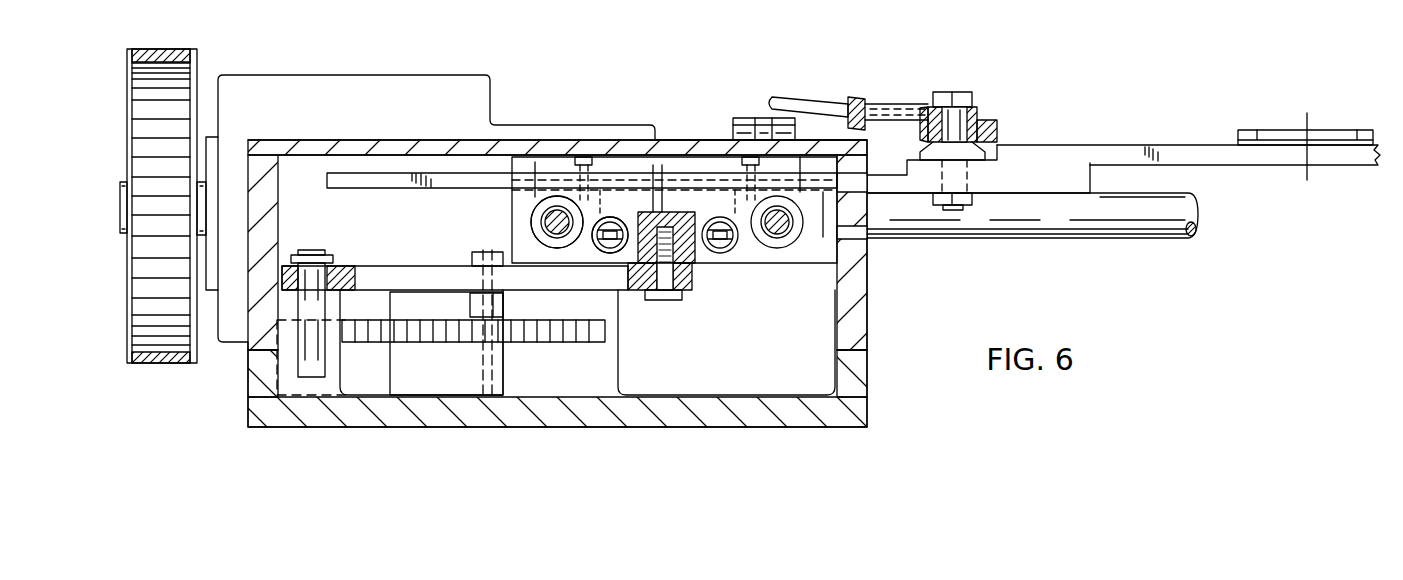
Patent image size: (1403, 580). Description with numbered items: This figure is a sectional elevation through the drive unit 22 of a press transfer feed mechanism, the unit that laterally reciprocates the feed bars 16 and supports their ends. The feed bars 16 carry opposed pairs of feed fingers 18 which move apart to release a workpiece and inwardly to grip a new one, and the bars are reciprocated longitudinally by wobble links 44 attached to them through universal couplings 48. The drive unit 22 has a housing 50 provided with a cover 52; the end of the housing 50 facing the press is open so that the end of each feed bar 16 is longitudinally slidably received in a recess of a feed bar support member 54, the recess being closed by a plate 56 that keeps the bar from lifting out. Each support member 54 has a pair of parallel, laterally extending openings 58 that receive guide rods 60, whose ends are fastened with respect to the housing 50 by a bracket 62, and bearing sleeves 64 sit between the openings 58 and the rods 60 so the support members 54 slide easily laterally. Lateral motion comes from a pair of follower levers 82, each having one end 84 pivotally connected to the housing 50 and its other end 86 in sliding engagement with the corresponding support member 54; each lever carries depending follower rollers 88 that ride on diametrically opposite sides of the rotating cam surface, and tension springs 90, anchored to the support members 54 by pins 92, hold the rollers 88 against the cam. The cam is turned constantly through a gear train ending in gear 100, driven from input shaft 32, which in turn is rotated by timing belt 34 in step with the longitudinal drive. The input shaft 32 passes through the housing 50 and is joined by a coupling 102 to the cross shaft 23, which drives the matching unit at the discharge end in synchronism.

The feed bars 16 is at (1193, 150).
The feed fingers 18 is at (1362, 137).
The drive unit 22 is at (541, 63).
The cross shaft 23 is at (1157, 226).
The input shaft 32 is at (118, 230).
The timing belt 34 is at (155, 365).
The wobble links 44 is at (803, 105).
The universal couplings 48 is at (987, 93).
The housing 50 is at (858, 320).
The cover 52 is at (682, 148).
The feed bar support members 54 is at (617, 158).
The plate 56 is at (647, 158).
The openings 58 is at (545, 208).
The guide rods 60 is at (545, 221).
The bracket 62 is at (813, 223).
The bearing sleeves 64 is at (557, 238).
The follower levers 82 is at (403, 277).
The end 84 is at (342, 273).
The other end 86 is at (692, 277).
The follower rollers 88 is at (505, 302).
The tension springs 90 is at (608, 252).
The pins 92 is at (605, 218).
The gear 100 is at (552, 337).
The coupling 102 is at (742, 113).